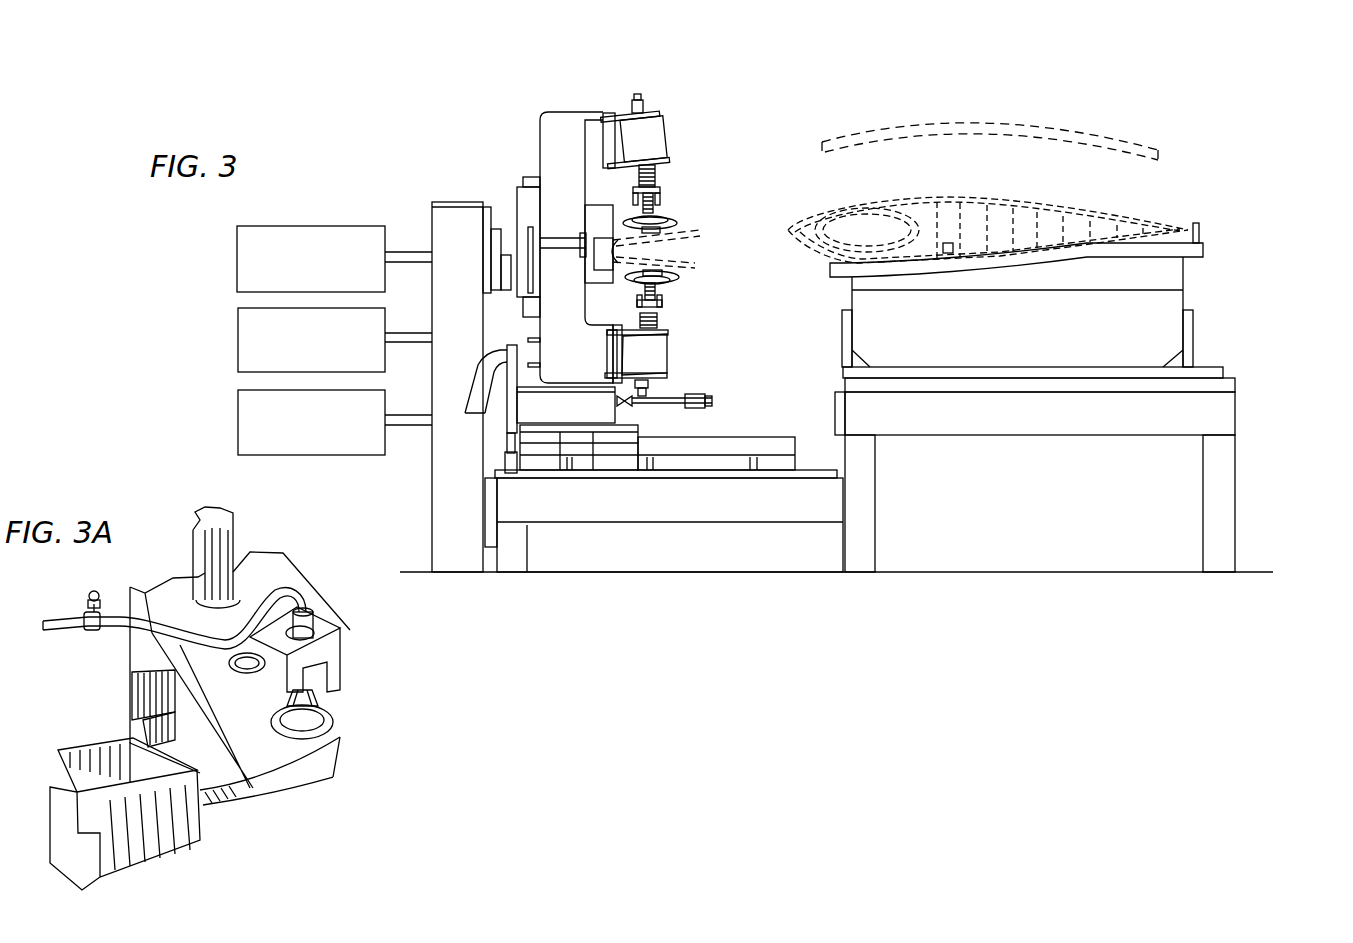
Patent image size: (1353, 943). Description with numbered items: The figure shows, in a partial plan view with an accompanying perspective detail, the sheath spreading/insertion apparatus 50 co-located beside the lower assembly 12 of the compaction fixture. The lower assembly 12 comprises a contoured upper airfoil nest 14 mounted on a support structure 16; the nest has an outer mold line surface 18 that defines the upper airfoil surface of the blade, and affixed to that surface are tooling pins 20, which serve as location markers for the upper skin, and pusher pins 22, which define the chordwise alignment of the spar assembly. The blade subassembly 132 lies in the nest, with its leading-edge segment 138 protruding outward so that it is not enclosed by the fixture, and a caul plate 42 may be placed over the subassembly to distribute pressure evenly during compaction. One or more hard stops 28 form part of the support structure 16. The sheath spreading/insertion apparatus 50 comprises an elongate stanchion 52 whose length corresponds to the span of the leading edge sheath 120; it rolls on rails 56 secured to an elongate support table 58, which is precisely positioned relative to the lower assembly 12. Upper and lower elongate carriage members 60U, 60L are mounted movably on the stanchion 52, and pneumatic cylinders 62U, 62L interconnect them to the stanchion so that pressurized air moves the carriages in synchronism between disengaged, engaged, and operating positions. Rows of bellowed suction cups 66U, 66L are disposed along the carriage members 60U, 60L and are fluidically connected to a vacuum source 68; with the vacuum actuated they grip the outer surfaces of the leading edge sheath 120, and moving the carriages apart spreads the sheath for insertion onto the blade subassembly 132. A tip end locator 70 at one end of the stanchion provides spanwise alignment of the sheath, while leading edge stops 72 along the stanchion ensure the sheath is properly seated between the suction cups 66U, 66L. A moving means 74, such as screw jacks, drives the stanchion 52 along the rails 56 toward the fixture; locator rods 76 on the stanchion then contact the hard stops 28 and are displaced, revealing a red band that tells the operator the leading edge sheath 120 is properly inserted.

In FIG. 3, the lower assembly 12 is at (1219, 348).
In FIG. 3, the contoured upper airfoil nest 14 is at (1216, 247).
In FIG. 3, the support structure 16 is at (1246, 412).
In FIG. 3, the outer mold line (OML) surface 18 is at (1034, 237).
In FIG. 3, the tooling pins 20 is at (1199, 225).
In FIG. 3, the pusher pins 22 is at (955, 241).
In FIG. 3, the hard stops 28 is at (829, 412).
In FIG. 3, the caul plate 42 is at (905, 112).
In FIG. 3, the sheath spreading/insertion apparatus 50 is at (452, 168).
In FIG. 3, the elongate stanchion 52 is at (571, 108).
In FIG. 3, the rails 56 is at (706, 461).
In FIG. 3, the elongate support table 58 is at (605, 528).
In FIG. 3, the upper elongate carriage member 60U is at (674, 137).
In FIG. 3A, the upper elongate carriage member 60U is at (333, 622).
In FIG. 3, the lower elongate carriage member 60L is at (676, 359).
In FIG. 3, the upper pneumatic cylinder 62U is at (646, 95).
In FIG. 3, the lower pneumatic cylinder 62L is at (657, 390).
In FIG. 3, the upper suction cups 66U is at (684, 223).
In FIG. 3A, the upper suction cups 66U is at (334, 700).
In FIG. 3, the lower suction cups 66L is at (677, 290).
In FIG. 3, the vacuum source 68 is at (232, 257).
In FIG. 3, the tip end locator 70 is at (605, 203).
In FIG. 3A, the tip end locator 70 is at (178, 838).
In FIG. 3, the leading edge stops 72 is at (590, 258).
In FIG. 3A, the leading edge stops 72 is at (148, 703).
In FIG. 3, the moving means 74 is at (232, 340).
In FIG. 3, the locator rods 76 is at (695, 411).
In FIG. 3, the leading edge sheath 120 is at (699, 270).
In FIG. 3A, the leading edge sheath 120 is at (321, 792).
In FIG. 3, the blade subassembly 132 is at (913, 196).
In FIG. 3, the leading-edge segment 138 is at (805, 205).